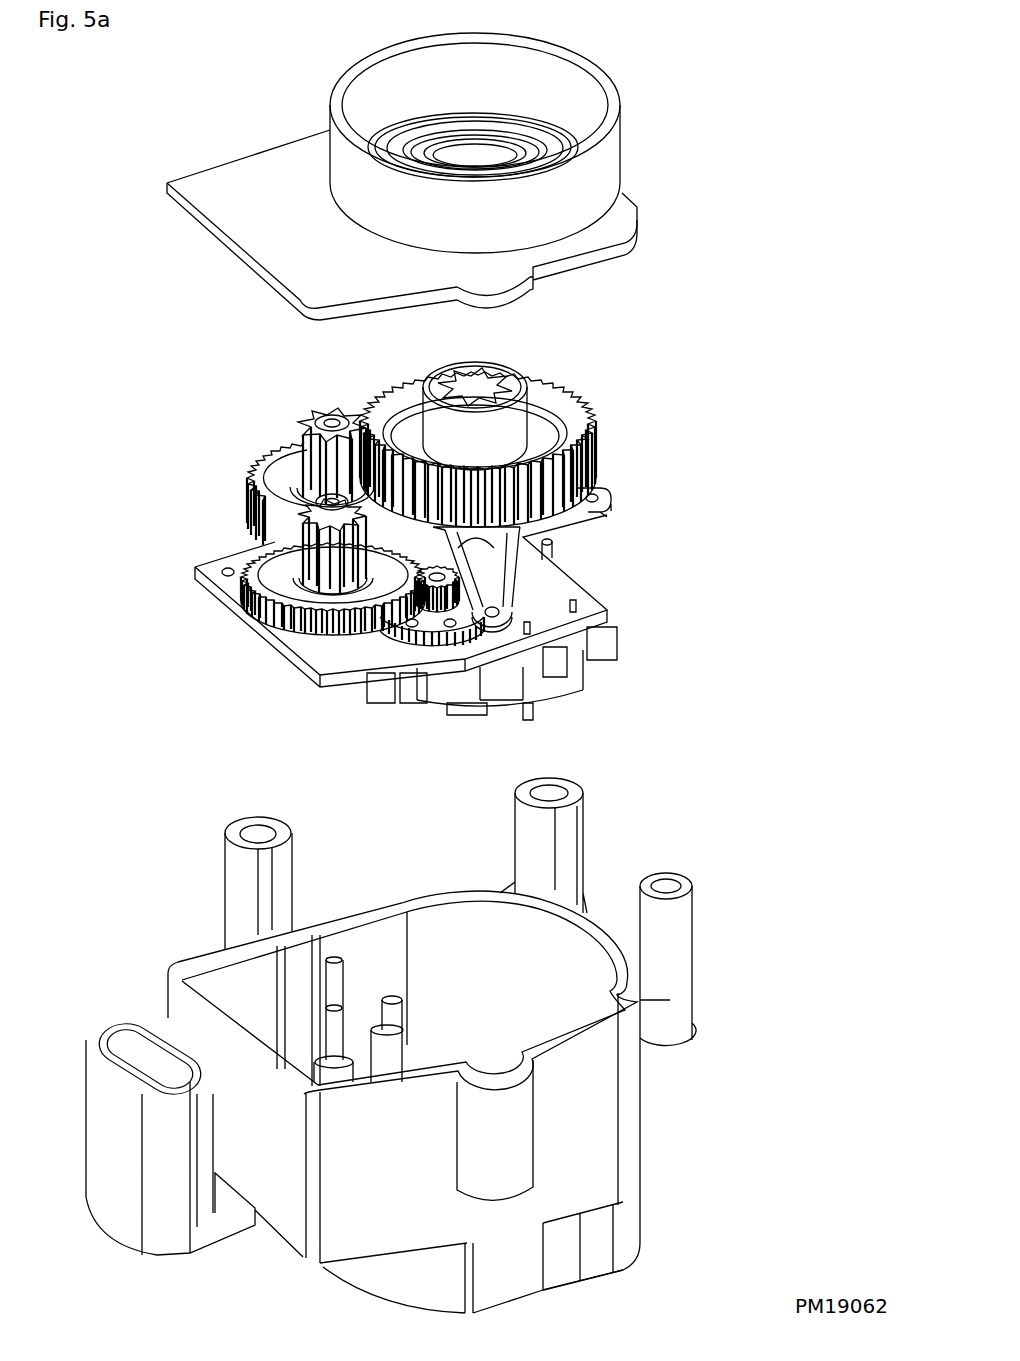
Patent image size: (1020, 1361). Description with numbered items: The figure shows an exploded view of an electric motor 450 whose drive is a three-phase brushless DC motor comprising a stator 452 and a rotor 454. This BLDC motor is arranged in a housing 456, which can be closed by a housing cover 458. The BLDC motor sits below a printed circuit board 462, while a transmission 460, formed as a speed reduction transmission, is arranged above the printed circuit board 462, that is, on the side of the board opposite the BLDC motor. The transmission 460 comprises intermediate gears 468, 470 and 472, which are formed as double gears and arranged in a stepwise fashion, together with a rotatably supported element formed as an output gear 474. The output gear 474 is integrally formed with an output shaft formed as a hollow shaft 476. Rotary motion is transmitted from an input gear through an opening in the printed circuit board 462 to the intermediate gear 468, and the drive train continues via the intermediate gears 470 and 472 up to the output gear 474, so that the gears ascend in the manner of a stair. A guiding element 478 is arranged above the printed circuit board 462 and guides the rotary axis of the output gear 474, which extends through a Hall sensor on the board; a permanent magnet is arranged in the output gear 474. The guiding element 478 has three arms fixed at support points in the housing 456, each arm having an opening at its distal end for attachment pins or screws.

The electric motor 450 is at (781, 108).
The housing cover 458 is at (278, 175).
The printed circuit board 462 is at (210, 567).
The intermediate gear 472 is at (297, 453).
The transmission 460 is at (292, 435).
The output gear 474 is at (597, 427).
The hollow shaft 476 is at (508, 425).
The intermediate gear 470 is at (295, 593).
The intermediate gear 468 is at (430, 624).
The guiding element 478 is at (485, 573).
The stator 452 is at (567, 680).
The rotor 454 is at (532, 675).
The housing 456 is at (579, 1108).